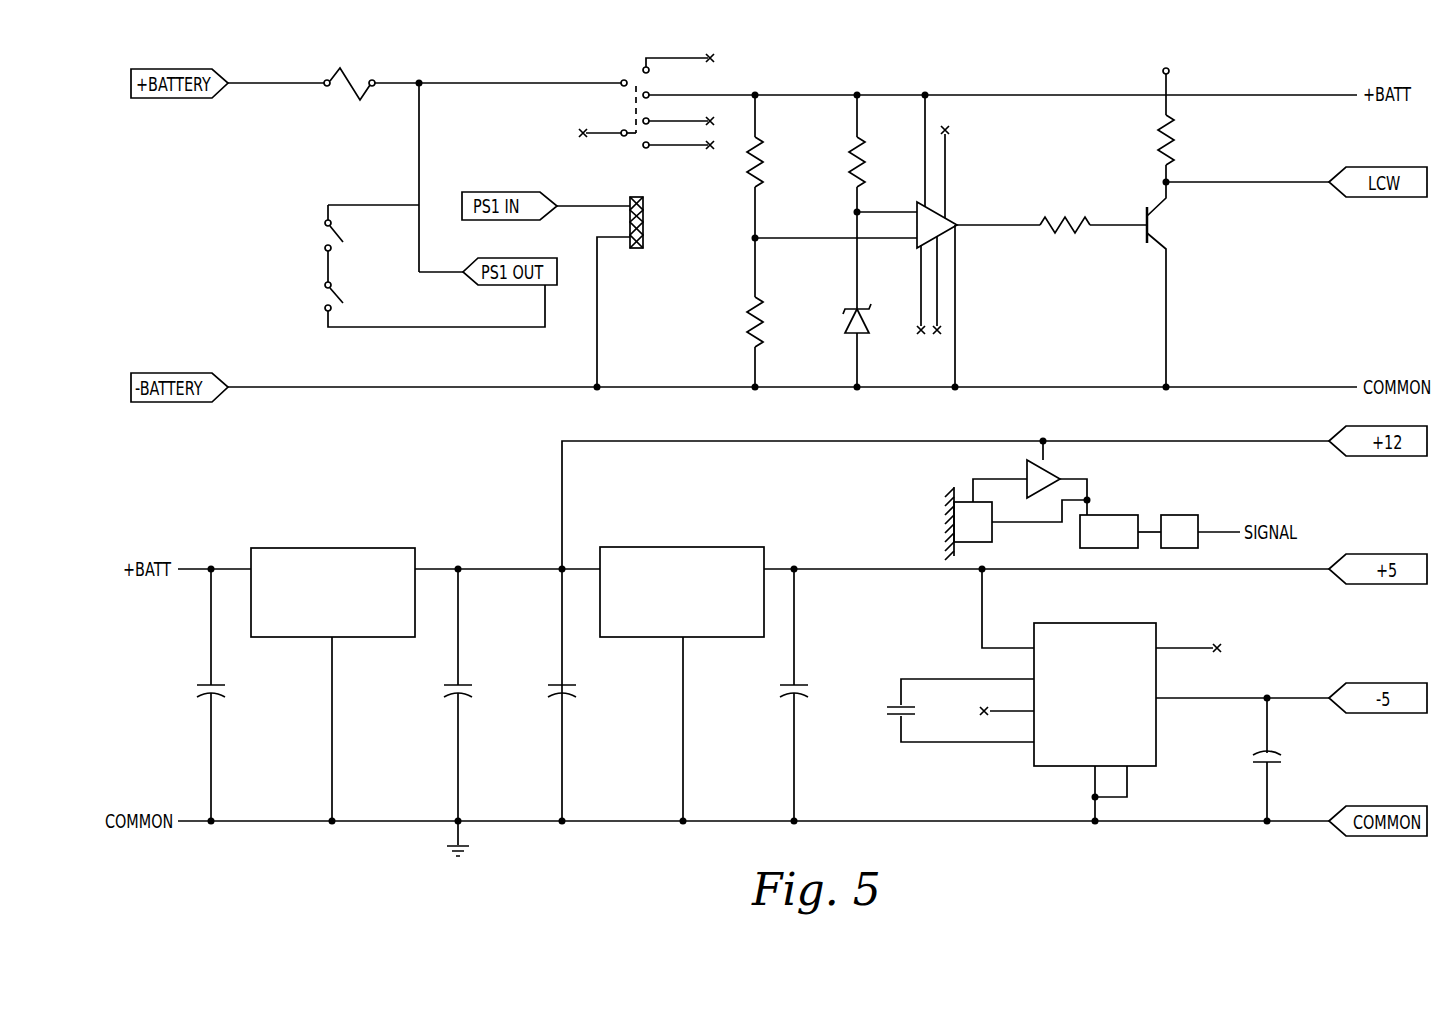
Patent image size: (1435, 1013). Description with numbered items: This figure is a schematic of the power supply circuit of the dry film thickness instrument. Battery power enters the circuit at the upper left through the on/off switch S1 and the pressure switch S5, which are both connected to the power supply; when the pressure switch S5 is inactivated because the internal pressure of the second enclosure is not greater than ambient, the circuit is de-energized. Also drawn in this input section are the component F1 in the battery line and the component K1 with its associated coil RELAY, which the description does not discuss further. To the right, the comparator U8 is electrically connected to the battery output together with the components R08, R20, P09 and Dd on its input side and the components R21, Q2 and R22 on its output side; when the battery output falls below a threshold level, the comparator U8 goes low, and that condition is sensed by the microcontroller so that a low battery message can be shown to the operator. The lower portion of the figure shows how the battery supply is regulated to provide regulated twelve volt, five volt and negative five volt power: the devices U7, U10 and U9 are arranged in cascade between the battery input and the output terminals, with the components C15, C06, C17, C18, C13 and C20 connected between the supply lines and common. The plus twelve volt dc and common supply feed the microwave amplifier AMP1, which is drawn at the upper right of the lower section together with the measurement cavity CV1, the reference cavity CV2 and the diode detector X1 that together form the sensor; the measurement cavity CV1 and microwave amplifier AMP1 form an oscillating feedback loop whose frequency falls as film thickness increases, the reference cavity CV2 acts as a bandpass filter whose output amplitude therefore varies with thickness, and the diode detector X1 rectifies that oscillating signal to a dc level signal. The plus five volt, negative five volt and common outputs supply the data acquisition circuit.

The fuse FLSE 75004 F1 is at (349, 94).
The relay contacts DPDT K1 is at (646, 91).
The on/off switch S1 is at (346, 228).
The pressure switch S5 is at (322, 300).
The relay coil DPDT RELAY is at (626, 285).
The resistor 13K R08 is at (771, 196).
The resistor 15K R20 is at (735, 342).
The potentiometer/resistor 220 P09 is at (873, 201).
The zener diode 1N4737 Dd is at (822, 341).
The comparator U8 is at (969, 241).
The resistor 3K R21 is at (1093, 230).
The transistor 2N2904 Q2 is at (1187, 284).
The resistor R22 is at (1181, 112).
The voltage regulator LM340-12 U7 is at (340, 658).
The voltage regulator LM78L054CH U10 is at (673, 659).
The voltage converter MAFSED U9 is at (1154, 695).
The capacitor 1.0UF C15 is at (232, 695).
The capacitor 0.1UF C06 is at (481, 695).
The capacitor 0.33UF C17 is at (588, 688).
The capacitor 0.04UF C18 is at (820, 695).
The capacitor 1.0UF C13 is at (960, 710).
The capacitor 1.0UF C20 is at (1241, 759).
The measurement cavity CV1 is at (1012, 510).
The microwave amplifier AMP1 is at (1063, 478).
The reference cavity CV2 is at (1120, 521).
The diode detector X1 is at (1200, 521).